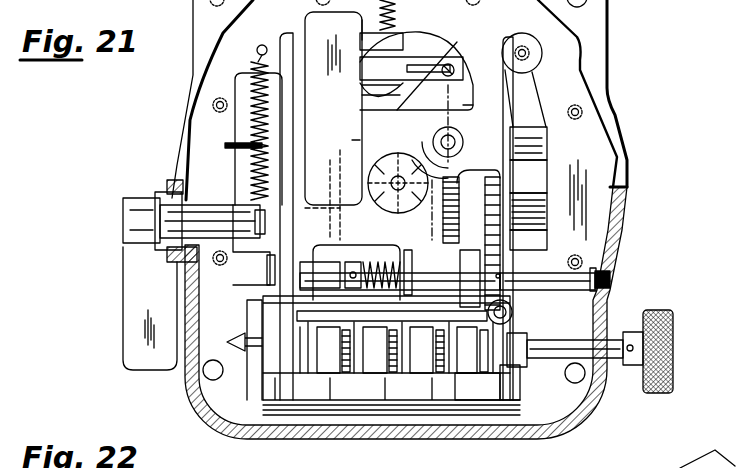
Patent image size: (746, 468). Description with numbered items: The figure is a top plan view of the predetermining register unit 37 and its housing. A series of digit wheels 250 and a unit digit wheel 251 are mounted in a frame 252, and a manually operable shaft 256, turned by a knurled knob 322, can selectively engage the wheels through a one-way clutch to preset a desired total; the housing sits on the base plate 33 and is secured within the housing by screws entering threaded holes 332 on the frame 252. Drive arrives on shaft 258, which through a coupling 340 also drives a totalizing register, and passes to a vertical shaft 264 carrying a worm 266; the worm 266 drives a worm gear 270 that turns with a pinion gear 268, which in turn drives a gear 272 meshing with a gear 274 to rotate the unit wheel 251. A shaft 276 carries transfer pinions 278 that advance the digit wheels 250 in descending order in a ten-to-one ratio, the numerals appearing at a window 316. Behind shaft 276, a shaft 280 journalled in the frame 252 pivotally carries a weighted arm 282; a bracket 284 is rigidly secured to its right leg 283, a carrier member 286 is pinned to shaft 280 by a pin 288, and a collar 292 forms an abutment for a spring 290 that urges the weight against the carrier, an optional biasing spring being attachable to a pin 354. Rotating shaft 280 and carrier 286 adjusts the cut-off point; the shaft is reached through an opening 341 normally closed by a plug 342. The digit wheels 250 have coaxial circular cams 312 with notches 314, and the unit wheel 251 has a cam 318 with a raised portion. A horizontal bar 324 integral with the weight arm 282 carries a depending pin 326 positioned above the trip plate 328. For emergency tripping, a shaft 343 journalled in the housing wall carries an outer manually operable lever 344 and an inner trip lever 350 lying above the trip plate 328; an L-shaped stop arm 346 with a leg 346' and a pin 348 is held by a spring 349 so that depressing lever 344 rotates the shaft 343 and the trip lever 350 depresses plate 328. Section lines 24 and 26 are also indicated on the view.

In FIG. 21, the section line 24- 24 is at (285, 290).
In FIG. 21, the section line 26- 26 is at (460, 93).
In FIG. 22, the base plate 33 is at (712, 459).
In FIG. 21, the predetermining register unit 37 is at (620, 103).
In FIG. 21, the digit wheels 250 is at (326, 376).
In FIG. 21, the unit digit wheel 251 is at (468, 380).
In FIG. 21, the frame 252 is at (286, 38).
In FIG. 21, the manually operable shaft 256 is at (628, 366).
In FIG. 21, the shaft 258 is at (398, 155).
In FIG. 21, the shaft 264 is at (456, 135).
In FIG. 21, the worm 266 is at (468, 105).
In FIG. 21, the pinion gear 268 is at (464, 145).
In FIG. 21, the worm gear 270 is at (460, 178).
In FIG. 21, the gear 272 is at (528, 221).
In FIG. 21, the gear 274 is at (512, 372).
In FIG. 21, the shaft 276 is at (498, 316).
In FIG. 21, the transfer pinions 278 is at (330, 316).
In FIG. 21, the shaft 280 is at (270, 268).
In FIG. 21, the weighted arm 282 is at (342, 109).
In FIG. 21, the right leg 283 is at (408, 255).
In FIG. 21, the bracket 284 is at (385, 242).
In FIG. 21, the carrier member 286 is at (470, 250).
In FIG. 21, the pin 288 is at (500, 275).
In FIG. 21, the spring 290 is at (378, 265).
In FIG. 21, the collar 292 is at (362, 264).
In FIG. 21, the circular cams 312 is at (391, 392).
In FIG. 21, the notches 314 is at (386, 384).
In FIG. 21, the window 316 is at (540, 440).
In FIG. 21, the cam 318 is at (456, 284).
In FIG. 21, the knurled knob 322 is at (676, 352).
In FIG. 21, the horizontal bar 324 is at (396, 30).
In FIG. 21, the pin 326 is at (447, 43).
In FIG. 21, the trip plate 328 is at (365, 95).
In FIG. 21, the threaded holes 332 is at (535, 68).
In FIG. 21, the coupling 340 is at (370, 160).
In FIG. 21, the opening 341 is at (609, 279).
In FIG. 21, the plug 342 is at (609, 288).
In FIG. 21, the shaft 343 is at (194, 210).
In FIG. 21, the manually operable lever 344 is at (128, 340).
In FIG. 21, the stop arm 346 is at (241, 179).
In FIG. 21, the leg 346' is at (230, 134).
In FIG. 21, the pin 348 is at (250, 222).
In FIG. 21, the spring 349 is at (252, 75).
In FIG. 21, the trip lever 350 is at (322, 160).
In FIG. 21, the pin 354 is at (362, 28).